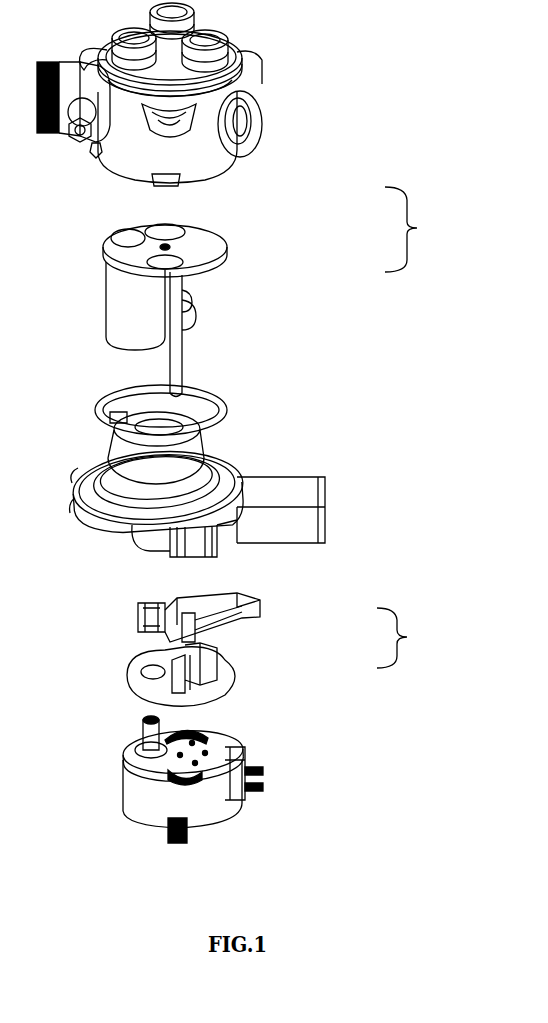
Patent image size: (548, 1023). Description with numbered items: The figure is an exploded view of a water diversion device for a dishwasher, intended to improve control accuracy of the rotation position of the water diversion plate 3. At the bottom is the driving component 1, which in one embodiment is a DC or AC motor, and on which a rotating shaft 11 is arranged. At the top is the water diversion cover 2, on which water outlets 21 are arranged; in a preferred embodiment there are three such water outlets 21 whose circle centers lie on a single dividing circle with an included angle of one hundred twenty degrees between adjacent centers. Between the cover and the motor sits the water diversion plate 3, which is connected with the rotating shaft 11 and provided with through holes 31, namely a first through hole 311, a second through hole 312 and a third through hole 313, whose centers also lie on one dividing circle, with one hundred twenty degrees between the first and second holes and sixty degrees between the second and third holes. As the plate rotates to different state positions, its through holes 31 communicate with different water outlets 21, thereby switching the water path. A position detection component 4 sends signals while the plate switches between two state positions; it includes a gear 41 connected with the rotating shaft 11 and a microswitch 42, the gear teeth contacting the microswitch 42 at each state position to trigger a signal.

The driving component 1 is at (180, 798).
The rotating shaft 11 is at (195, 735).
The water diversion cover 2 is at (250, 94).
The water outlets 21 is at (238, 42).
The water diversion plate 3 is at (190, 280).
The through holes 31 is at (421, 229).
The first through hole 311 is at (200, 267).
The second through hole 312 is at (200, 238).
The third through hole 313 is at (195, 227).
The position detection component 4 is at (406, 638).
The gear 41 is at (220, 628).
The microswitch 42 is at (250, 608).